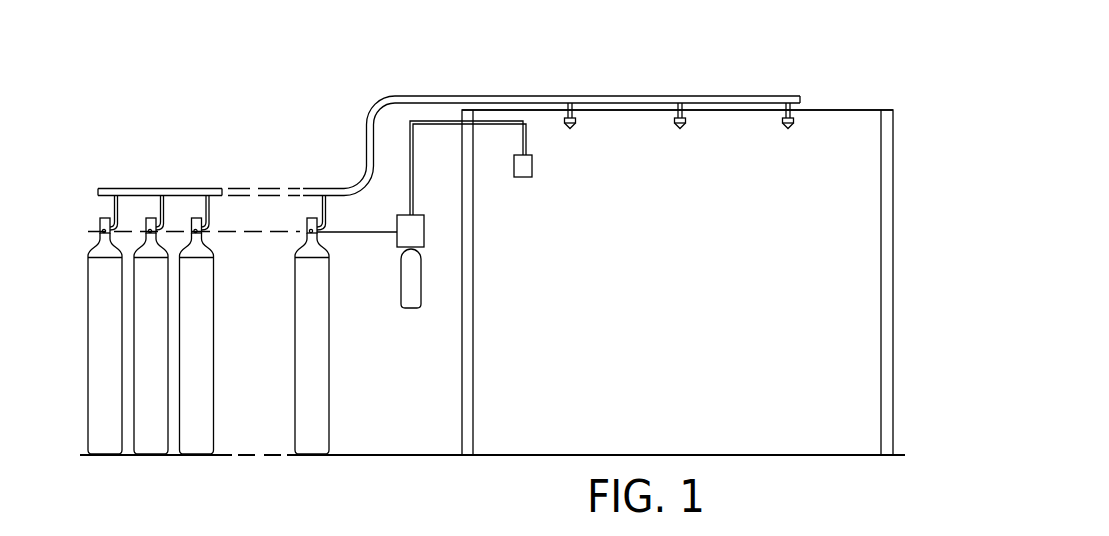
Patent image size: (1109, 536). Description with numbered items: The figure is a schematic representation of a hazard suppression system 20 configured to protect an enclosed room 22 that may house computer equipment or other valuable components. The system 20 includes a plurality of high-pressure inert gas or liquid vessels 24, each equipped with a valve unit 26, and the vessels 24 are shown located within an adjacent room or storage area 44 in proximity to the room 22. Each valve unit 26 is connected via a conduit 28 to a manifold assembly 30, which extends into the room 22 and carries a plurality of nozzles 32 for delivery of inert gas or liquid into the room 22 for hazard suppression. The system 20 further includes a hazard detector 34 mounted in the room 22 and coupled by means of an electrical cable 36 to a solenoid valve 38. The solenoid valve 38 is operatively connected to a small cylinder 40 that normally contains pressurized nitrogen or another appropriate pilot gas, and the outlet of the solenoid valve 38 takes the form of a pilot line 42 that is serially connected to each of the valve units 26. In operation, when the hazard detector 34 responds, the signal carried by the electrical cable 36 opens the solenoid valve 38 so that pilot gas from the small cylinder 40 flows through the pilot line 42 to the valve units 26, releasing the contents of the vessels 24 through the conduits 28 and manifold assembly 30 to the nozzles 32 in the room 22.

The hazard suppression system 20 is at (826, 103).
The enclosed room 22 is at (677, 282).
The high-pressure inert gas or liquid vessels 24 is at (317, 299).
The valve unit 26 is at (300, 218).
The conduit 28 is at (326, 208).
The manifold assembly 30 is at (637, 98).
The nozzles 32 is at (577, 122).
The hazard detector 34 is at (523, 172).
The electrical cable 36 is at (527, 137).
The solenoid valve 38 is at (417, 230).
The small cylinder 40 is at (410, 302).
The pilot line 42 is at (373, 233).
The adjacent room or storage area 44 is at (194, 322).